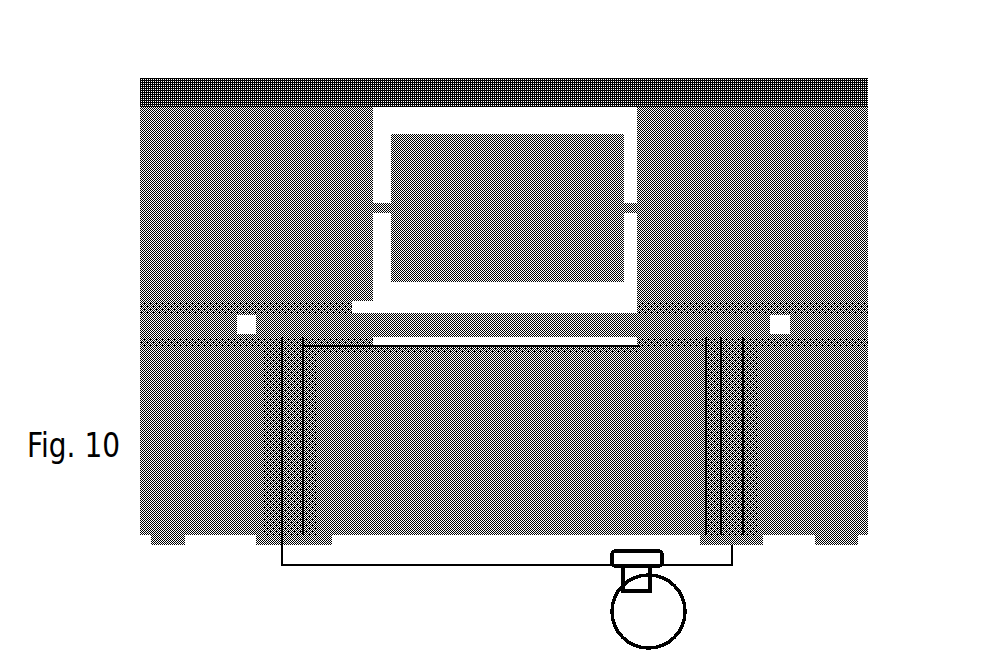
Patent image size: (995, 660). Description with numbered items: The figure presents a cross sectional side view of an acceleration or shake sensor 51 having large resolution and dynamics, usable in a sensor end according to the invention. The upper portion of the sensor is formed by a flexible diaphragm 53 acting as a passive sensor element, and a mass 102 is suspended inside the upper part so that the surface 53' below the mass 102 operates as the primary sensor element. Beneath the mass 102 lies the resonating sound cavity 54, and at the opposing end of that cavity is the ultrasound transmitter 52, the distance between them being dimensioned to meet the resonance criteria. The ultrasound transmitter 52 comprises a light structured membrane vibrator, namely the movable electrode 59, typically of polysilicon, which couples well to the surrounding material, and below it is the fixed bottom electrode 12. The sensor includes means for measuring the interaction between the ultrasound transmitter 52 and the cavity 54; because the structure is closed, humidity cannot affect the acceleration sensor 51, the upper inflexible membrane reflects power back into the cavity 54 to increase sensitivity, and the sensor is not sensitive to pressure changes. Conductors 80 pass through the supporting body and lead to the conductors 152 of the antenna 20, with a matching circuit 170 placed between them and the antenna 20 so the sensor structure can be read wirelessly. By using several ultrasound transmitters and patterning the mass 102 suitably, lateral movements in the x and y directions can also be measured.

The acceleration sensor 51 is at (162, 70).
The flexible diaphragm, passive sensor element 53 is at (504, 66).
The surface below the mass 53' is at (473, 236).
The resonating sound cavity 54 is at (520, 304).
The mass 102 is at (595, 188).
The movable electrode of the ultrasound transmitter 59 is at (637, 318).
The ultrasound transmitter 52 is at (553, 342).
The fixed electrode, bottom electrode 12 is at (396, 357).
The conductors 80 is at (307, 436).
The conductors of the antenna 152 is at (358, 565).
The matching circuit 170 is at (625, 550).
The antenna 20 is at (686, 618).